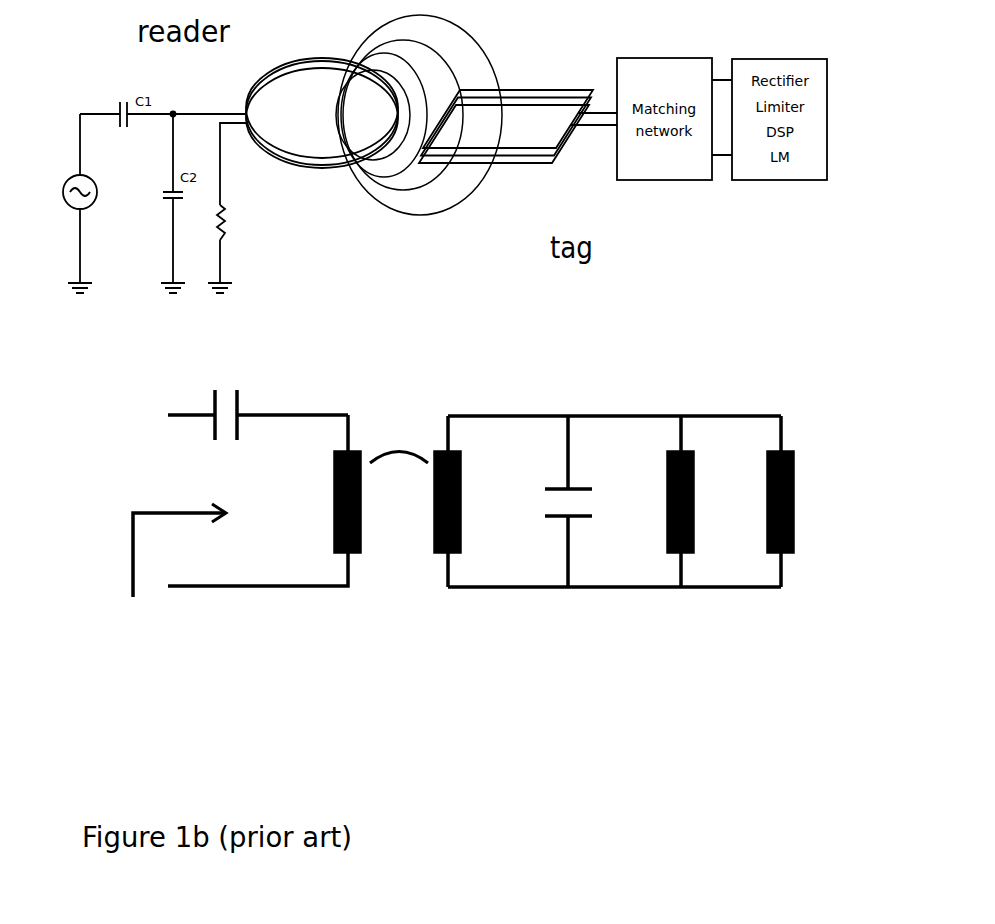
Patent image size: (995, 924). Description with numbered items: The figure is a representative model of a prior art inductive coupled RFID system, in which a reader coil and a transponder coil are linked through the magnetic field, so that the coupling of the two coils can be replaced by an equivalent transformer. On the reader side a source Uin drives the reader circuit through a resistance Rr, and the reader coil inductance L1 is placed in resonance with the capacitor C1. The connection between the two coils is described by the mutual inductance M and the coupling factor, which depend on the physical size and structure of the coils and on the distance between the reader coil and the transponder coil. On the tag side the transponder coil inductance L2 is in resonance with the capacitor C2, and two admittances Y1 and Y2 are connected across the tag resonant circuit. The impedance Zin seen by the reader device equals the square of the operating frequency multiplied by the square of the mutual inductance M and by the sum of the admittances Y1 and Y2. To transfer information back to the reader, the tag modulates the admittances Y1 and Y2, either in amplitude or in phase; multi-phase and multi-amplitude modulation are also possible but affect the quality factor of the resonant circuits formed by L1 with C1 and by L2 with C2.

The input voltage source Uin is at (70, 203).
The reader resistor Rr is at (227, 208).
The capacitor C1 is at (258, 397).
The inductance of the reader coil L1 is at (264, 500).
The impedance as seen by the reader device Zin is at (169, 580).
The mutual inductance M is at (399, 438).
The inductance of the transponder coil L2 is at (466, 501).
The capacitor C2 is at (579, 501).
The admittance Y1 is at (701, 501).
The admittance Y2 is at (801, 501).